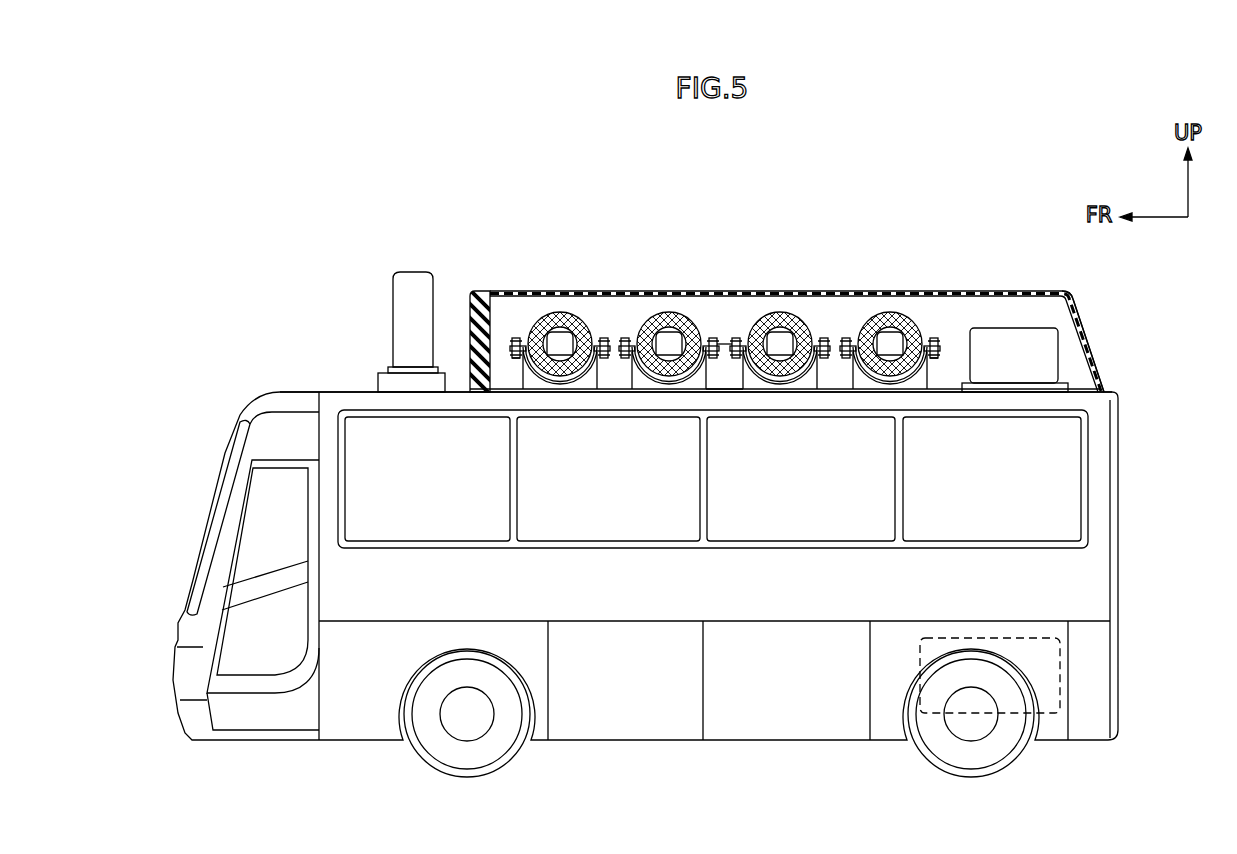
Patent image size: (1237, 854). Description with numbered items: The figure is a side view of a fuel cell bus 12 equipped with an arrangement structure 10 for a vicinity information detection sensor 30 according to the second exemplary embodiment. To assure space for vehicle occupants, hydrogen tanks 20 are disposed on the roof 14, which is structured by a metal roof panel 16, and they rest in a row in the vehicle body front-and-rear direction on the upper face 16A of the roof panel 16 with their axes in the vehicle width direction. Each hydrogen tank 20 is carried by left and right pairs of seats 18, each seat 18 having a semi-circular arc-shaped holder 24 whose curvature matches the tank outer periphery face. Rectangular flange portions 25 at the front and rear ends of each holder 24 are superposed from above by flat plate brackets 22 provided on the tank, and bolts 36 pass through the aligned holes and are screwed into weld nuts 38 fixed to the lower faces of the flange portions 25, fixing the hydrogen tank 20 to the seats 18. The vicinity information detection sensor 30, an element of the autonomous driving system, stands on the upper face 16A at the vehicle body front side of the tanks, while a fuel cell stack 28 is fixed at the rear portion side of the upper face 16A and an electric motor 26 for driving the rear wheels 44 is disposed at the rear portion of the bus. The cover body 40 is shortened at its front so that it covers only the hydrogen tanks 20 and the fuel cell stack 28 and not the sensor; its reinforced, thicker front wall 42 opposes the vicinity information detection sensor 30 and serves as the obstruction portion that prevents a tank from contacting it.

The arrangement structure 10 is at (765, 283).
The fuel cell bus 12 is at (812, 258).
The roof 14 is at (297, 374).
The roof panel 16 is at (330, 384).
The upper face 16A is at (1073, 392).
The seat 18 is at (530, 384).
The hydrogen tank 20 is at (562, 312).
The bracket 22 is at (512, 337).
The holder 24 is at (588, 384).
The flange portion 25 is at (512, 360).
The electric motor 26 is at (1060, 678).
The fuel cell stack 28 is at (1028, 340).
The vicinity information detection sensor 30 is at (411, 266).
The bolt 36 is at (722, 338).
The weld nut 38 is at (731, 356).
The cover body 40 is at (1003, 283).
The front wall 42 is at (465, 330).
The rear wheel 44 is at (928, 757).